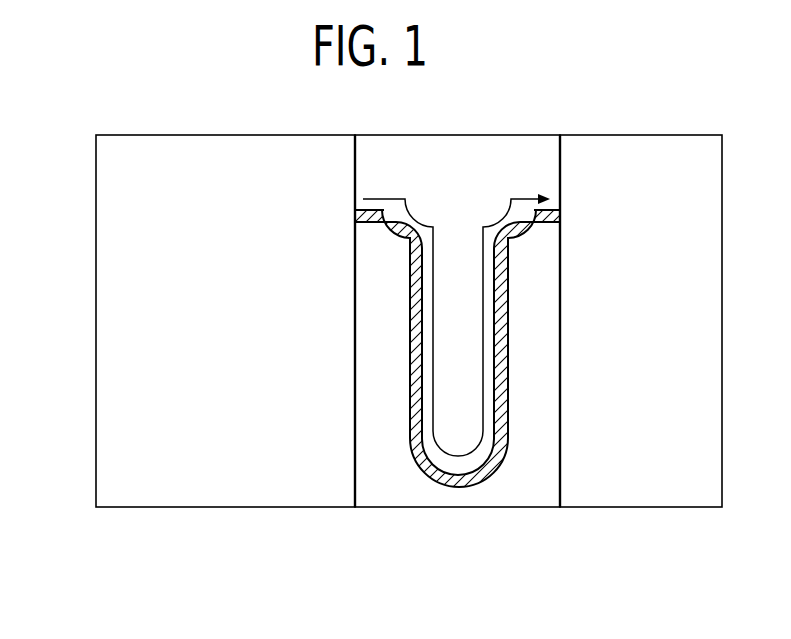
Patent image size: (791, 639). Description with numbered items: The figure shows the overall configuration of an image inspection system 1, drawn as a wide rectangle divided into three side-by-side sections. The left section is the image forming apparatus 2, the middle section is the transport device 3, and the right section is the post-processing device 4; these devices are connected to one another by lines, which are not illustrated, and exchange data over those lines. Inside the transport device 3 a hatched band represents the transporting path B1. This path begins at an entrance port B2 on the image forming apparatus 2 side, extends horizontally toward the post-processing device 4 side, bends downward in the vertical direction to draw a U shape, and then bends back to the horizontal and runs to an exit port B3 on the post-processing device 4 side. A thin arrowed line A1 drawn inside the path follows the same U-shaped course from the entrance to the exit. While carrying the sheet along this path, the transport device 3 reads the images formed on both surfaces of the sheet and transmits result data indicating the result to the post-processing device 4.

The image inspection system 1 is at (388, 321).
The image forming apparatus 2 is at (327, 486).
The transport device 3 is at (538, 486).
The post-processing device 4 is at (705, 486).
The current path A1 is at (390, 198).
The transporting path B1 is at (506, 362).
The entrance port B2 is at (368, 222).
The exit port B3 is at (547, 222).